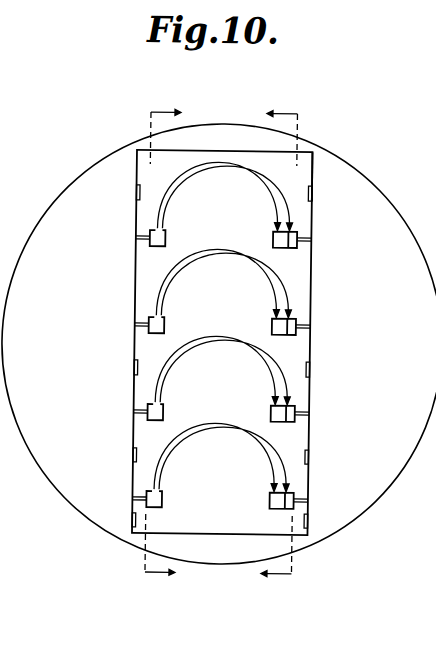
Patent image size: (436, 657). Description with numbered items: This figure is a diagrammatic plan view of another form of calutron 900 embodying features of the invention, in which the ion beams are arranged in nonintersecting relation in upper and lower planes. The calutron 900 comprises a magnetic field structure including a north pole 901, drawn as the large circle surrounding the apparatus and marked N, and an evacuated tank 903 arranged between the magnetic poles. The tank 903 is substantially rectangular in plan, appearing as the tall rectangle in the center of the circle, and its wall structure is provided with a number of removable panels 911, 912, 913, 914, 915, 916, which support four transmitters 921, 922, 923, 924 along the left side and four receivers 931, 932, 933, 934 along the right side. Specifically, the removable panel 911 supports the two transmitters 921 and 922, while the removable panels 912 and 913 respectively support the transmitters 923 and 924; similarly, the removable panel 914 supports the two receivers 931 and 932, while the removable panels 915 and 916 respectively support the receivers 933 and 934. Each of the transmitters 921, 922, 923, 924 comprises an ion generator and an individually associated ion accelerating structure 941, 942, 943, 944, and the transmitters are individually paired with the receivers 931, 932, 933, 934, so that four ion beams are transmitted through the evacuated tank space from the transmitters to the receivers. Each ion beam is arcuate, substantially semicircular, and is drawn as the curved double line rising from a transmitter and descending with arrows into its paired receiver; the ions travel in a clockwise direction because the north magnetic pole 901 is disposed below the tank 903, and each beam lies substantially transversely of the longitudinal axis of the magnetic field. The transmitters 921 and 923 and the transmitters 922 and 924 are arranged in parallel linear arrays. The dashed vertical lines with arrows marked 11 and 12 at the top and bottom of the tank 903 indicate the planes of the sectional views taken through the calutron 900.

The calutron 900 is at (241, 112).
The north magnetic pole 901 is at (108, 160).
The evacuated tank 903 is at (318, 168).
The neutral terminal N is at (355, 188).
The section line 11 is at (162, 344).
The section line 12 is at (285, 345).
The removable panel 911 is at (136, 238).
The removable panel 912 is at (136, 393).
The removable panel 913 is at (136, 456).
The removable panel 914 is at (311, 215).
The removable panel 915 is at (310, 371).
The removable panel 916 is at (310, 457).
The transmitter 921 is at (150, 247).
The transmitter 922 is at (148, 327).
The transmitter 923 is at (148, 415).
The transmitter 924 is at (148, 501).
The receiver 931 is at (298, 241).
The receiver 932 is at (300, 327).
The receiver 933 is at (298, 415).
The receiver 934 is at (298, 500).
The ion accelerating structure 941 is at (152, 229).
The ion accelerating structure 942 is at (152, 316).
The ion accelerating structure 943 is at (152, 403).
The ion accelerating structure 944 is at (152, 490).